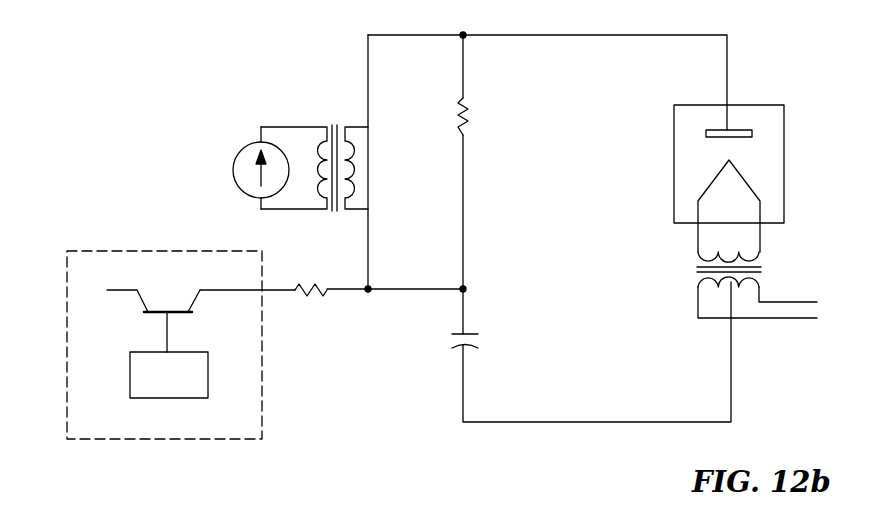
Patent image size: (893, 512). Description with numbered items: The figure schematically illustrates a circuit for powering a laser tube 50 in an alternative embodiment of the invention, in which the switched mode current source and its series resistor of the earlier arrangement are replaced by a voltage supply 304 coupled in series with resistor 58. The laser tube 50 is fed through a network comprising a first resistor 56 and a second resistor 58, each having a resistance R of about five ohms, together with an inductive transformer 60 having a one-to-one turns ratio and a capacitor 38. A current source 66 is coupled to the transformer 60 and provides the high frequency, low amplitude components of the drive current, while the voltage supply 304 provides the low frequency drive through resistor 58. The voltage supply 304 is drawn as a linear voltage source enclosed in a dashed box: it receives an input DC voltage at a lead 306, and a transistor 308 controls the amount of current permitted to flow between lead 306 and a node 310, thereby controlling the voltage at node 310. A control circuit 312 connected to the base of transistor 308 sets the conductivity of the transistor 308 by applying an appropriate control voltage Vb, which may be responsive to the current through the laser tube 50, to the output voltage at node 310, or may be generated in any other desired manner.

The capacitor 38 is at (482, 341).
The laser tube 50 is at (784, 168).
The first resistor 56 is at (470, 122).
The second resistor 58 is at (311, 306).
The inductive transformer 60 is at (336, 114).
The current source 66 is at (235, 182).
The voltage supply 304 is at (262, 396).
The lead 306 is at (110, 297).
The transistor 308 is at (193, 306).
The node 310 is at (218, 292).
The control circuit 312 is at (169, 375).